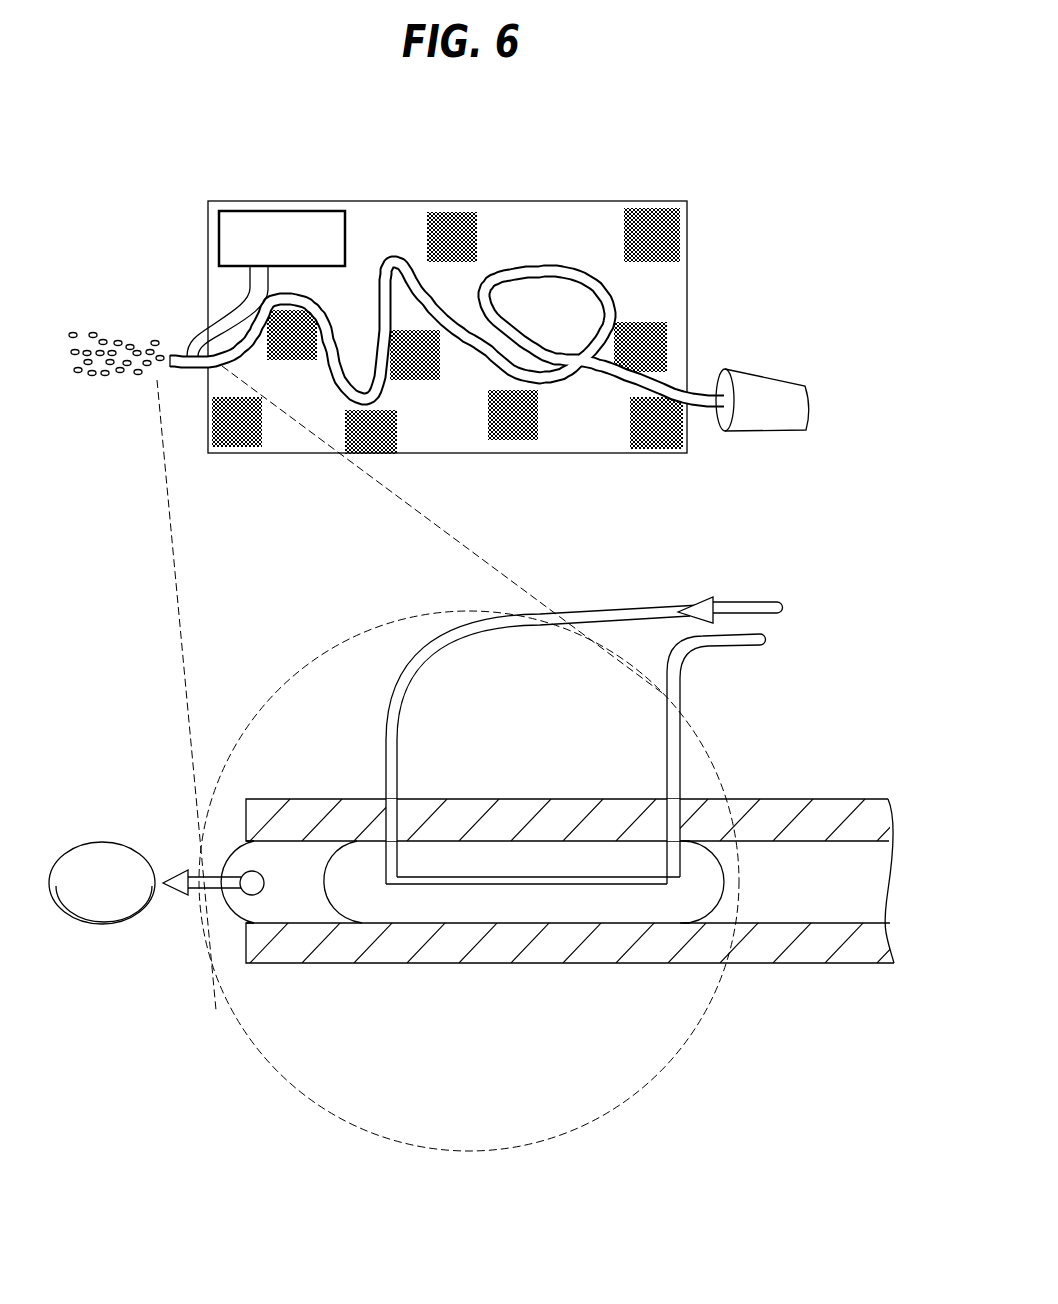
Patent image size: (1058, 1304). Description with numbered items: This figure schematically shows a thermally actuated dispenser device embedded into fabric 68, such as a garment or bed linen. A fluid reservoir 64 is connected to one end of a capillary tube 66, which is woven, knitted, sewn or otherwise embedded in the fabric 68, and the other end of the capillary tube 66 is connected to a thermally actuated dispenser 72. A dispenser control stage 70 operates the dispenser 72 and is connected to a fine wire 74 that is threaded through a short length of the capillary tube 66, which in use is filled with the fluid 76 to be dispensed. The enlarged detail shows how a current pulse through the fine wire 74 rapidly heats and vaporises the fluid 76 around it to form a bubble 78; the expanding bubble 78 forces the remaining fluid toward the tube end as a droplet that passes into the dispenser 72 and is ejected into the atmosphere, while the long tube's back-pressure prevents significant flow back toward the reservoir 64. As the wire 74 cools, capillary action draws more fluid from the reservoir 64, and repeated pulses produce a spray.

The fluid reservoir 64 is at (768, 381).
The capillary tube 66 is at (388, 262).
The fabric 68 is at (548, 201).
The dispenser control stage 70 is at (288, 209).
The thermally actuated dispenser 72 is at (176, 368).
The fine wire 74 is at (633, 883).
The fluid 76 is at (220, 857).
The bubble 78 is at (362, 887).